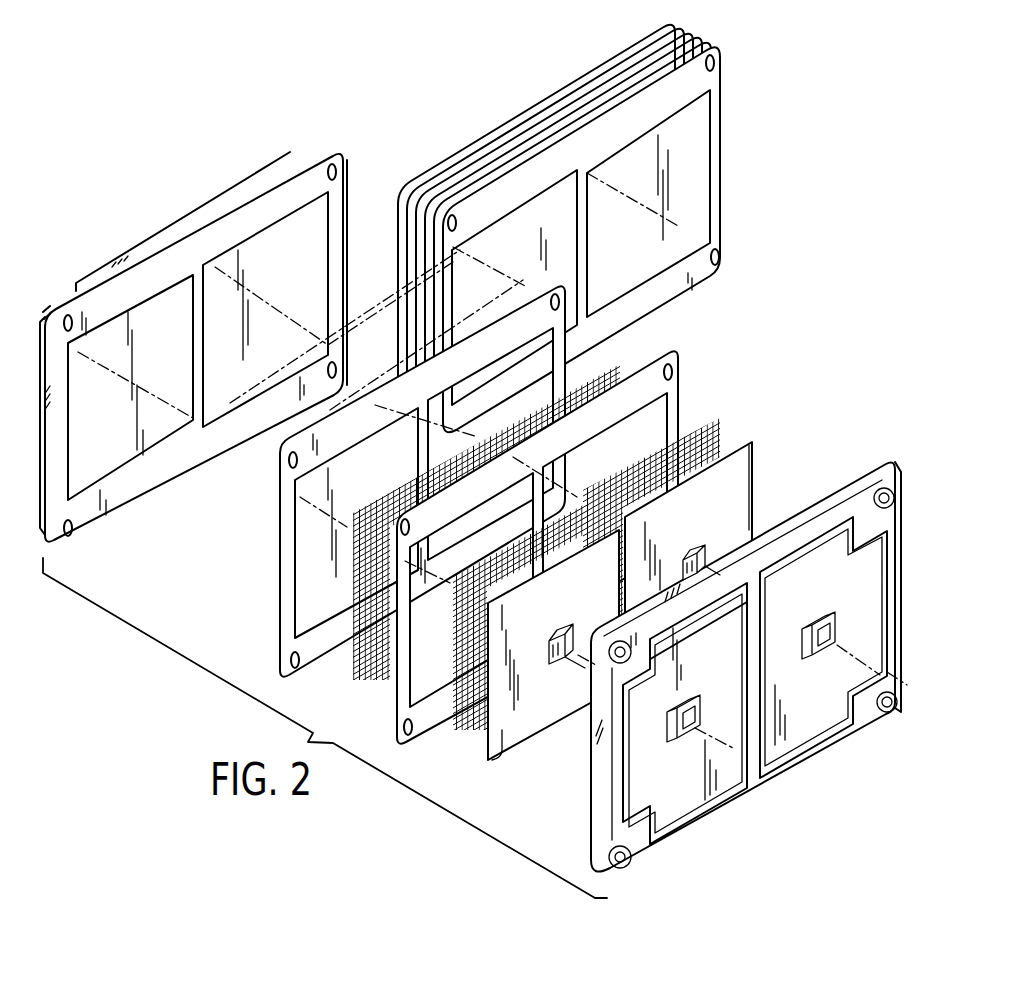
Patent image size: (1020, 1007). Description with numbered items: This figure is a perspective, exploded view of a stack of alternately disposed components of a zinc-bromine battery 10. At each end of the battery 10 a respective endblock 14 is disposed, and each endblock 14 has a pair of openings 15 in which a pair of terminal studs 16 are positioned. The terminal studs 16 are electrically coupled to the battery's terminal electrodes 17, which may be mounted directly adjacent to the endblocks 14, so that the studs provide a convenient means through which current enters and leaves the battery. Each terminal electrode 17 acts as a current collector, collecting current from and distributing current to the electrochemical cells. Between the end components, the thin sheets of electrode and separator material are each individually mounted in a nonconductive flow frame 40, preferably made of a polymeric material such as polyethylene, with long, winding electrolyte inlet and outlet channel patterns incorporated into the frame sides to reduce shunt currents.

The zinc-bromine battery 10 is at (473, 461).
The endblock 14 is at (193, 347).
The opening 15 is at (690, 724).
The terminal stud 16 is at (552, 664).
The terminal electrode 17 is at (490, 758).
The nonconductive flow frame 40 is at (717, 120).